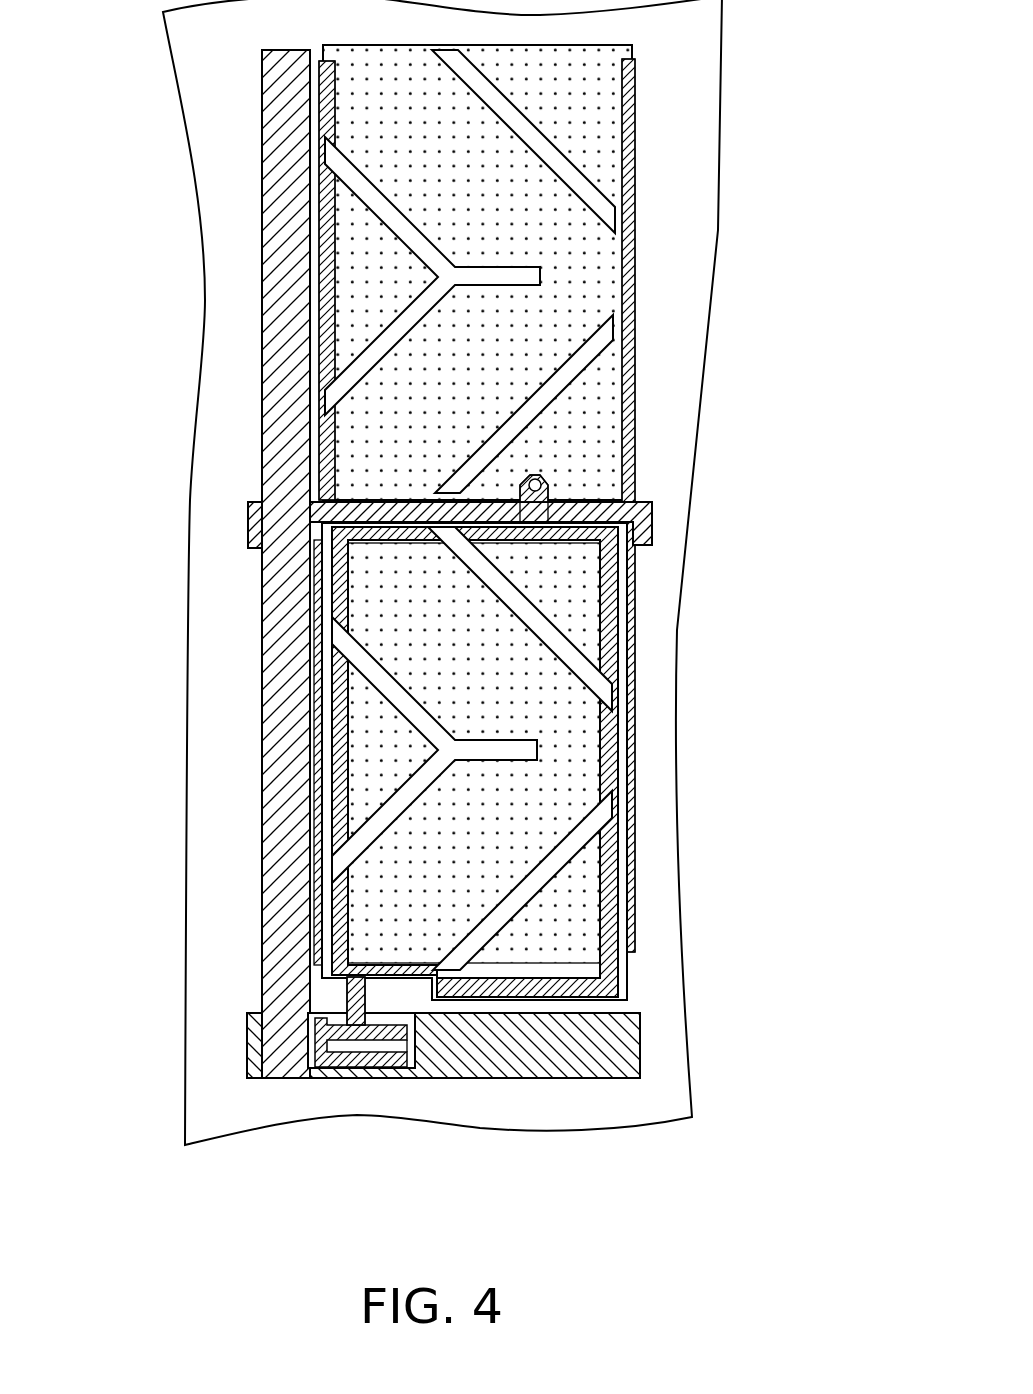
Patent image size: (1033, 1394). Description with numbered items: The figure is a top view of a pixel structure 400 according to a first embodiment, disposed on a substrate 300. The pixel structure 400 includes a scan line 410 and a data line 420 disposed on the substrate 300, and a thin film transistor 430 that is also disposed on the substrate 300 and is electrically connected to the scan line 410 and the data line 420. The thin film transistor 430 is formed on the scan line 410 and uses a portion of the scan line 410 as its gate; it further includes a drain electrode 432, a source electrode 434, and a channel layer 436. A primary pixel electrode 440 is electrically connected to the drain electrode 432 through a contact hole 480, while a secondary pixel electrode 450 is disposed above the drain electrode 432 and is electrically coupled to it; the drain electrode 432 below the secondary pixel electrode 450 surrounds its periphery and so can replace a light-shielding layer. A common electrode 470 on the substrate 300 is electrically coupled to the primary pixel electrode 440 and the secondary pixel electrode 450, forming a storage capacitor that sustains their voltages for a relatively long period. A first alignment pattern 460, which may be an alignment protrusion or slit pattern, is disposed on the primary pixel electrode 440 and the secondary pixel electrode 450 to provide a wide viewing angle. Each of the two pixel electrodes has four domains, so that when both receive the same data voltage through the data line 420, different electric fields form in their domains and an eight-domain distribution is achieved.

The substrate 300 is at (628, 1103).
The pixel structure 400 is at (822, 1160).
The scan line 410 is at (610, 1050).
The data line 420 is at (290, 222).
The thin film transistor 430 is at (386, 1115).
The drain electrode 432 is at (378, 1030).
The source electrode 434 is at (322, 1060).
The channel layer 436 is at (443, 1102).
The primary pixel electrode 440 is at (587, 277).
The secondary pixel electrode 450 is at (577, 915).
The first alignment pattern 460 is at (505, 113).
The common electrode 470 is at (652, 512).
The contact hole 480 is at (538, 483).